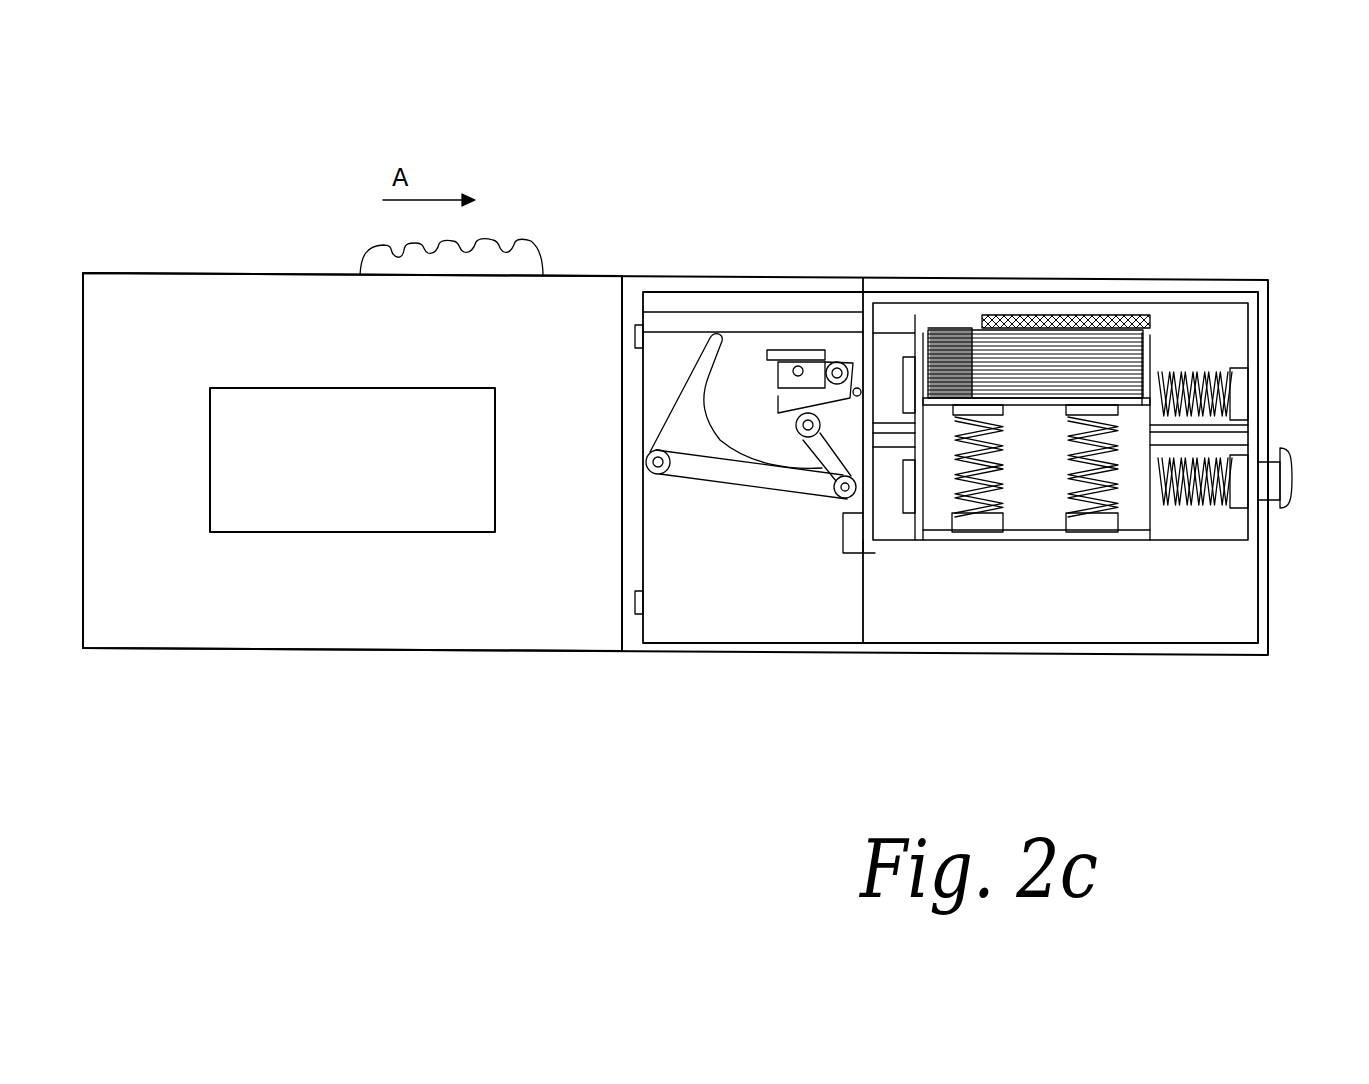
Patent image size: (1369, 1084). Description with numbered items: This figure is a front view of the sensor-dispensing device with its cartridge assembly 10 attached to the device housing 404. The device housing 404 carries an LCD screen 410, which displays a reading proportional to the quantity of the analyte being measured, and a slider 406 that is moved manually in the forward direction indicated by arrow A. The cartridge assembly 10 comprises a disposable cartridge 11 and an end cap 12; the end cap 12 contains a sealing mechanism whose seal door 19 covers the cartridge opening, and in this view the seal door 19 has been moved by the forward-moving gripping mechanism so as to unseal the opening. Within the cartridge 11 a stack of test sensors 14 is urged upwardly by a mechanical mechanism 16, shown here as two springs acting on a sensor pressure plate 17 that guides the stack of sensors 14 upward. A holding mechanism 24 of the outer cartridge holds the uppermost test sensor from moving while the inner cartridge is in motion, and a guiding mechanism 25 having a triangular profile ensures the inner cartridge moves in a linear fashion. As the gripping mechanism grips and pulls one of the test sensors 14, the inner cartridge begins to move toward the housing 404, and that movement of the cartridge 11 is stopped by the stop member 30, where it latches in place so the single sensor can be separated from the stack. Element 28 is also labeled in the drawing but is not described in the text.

The cartridge assembly 10 is at (1165, 150).
The cartridge 11 is at (1208, 330).
The end cap 12 is at (697, 650).
The test sensors 14 is at (948, 330).
The mechanical mechanism 16 is at (973, 525).
The sensor pressure plate 17 is at (1040, 405).
The seal door 19 is at (792, 350).
The holding mechanism 24 is at (1060, 318).
The guiding mechanism 25 is at (1238, 432).
The base 28 is at (1190, 637).
The stop member 30 is at (860, 627).
The device housing 404 is at (178, 645).
The slider 406 is at (517, 258).
The LCD screen 410 is at (290, 508).